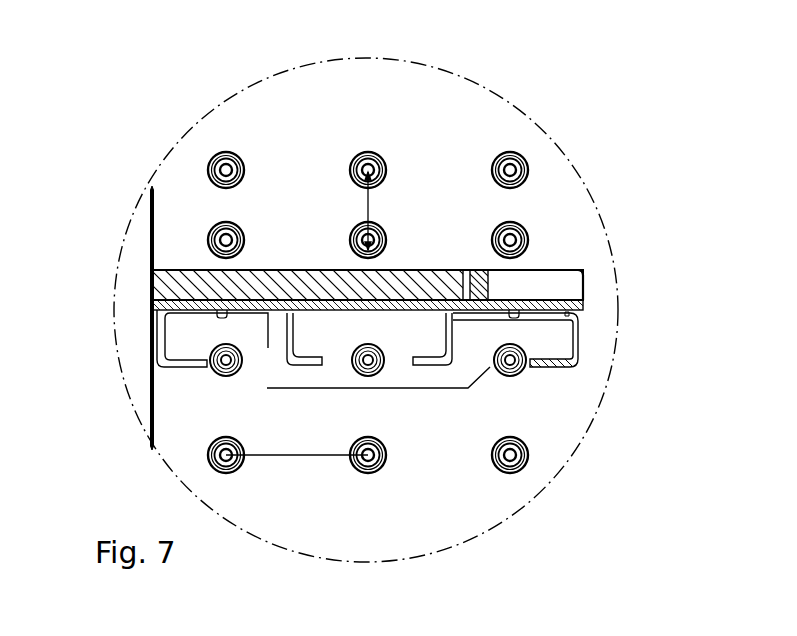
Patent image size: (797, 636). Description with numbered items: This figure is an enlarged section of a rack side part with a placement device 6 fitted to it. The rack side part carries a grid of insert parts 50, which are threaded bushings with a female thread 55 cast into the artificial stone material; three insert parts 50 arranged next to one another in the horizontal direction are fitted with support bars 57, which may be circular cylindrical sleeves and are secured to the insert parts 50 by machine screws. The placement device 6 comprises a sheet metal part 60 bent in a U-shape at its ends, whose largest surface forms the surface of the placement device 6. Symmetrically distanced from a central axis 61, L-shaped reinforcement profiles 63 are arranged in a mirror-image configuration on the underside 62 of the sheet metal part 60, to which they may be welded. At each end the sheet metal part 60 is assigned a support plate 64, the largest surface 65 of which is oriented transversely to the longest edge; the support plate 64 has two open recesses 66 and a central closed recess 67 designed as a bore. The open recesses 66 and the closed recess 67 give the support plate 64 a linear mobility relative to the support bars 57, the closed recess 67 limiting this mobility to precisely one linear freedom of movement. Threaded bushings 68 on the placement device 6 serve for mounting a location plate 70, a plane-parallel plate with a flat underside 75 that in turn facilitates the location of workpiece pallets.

The placement device 6 is at (195, 328).
The insert parts 50 is at (528, 233).
The female thread 55 is at (524, 160).
The support bars 57 is at (527, 370).
The sheet metal part 60 is at (577, 337).
The central axis 61 is at (200, 269).
The underside 62 is at (405, 312).
The L-shaped reinforcement profiles 63 is at (247, 370).
The support plate 64 is at (543, 343).
The largest surface 65 is at (490, 352).
The open recesses 66 is at (160, 344).
The closed recess 67 is at (378, 348).
The threaded bushings 68 is at (514, 314).
The location plate 70 is at (550, 288).
The flat underside 75 is at (267, 388).